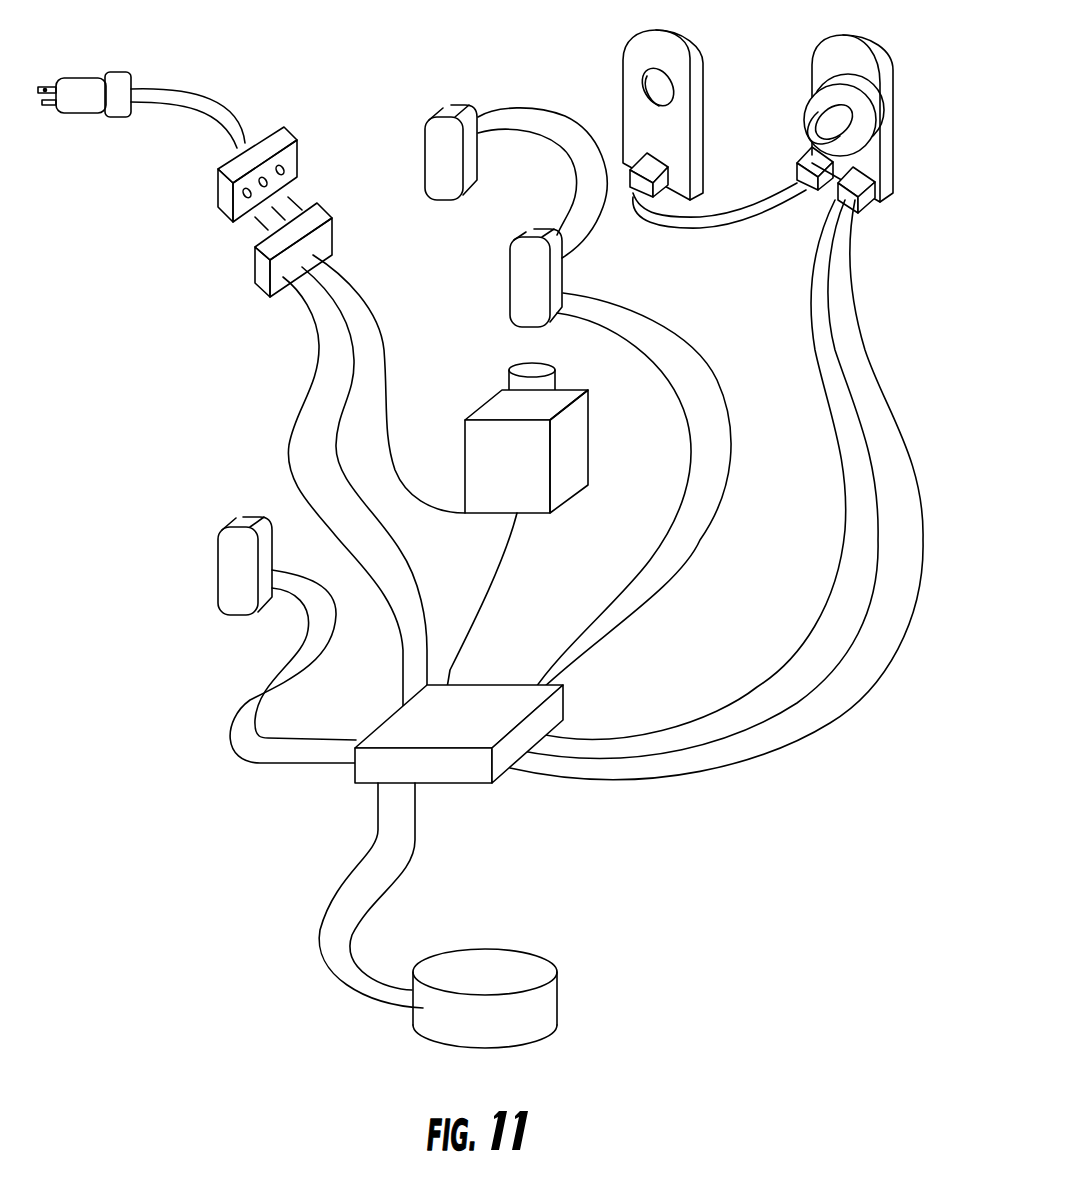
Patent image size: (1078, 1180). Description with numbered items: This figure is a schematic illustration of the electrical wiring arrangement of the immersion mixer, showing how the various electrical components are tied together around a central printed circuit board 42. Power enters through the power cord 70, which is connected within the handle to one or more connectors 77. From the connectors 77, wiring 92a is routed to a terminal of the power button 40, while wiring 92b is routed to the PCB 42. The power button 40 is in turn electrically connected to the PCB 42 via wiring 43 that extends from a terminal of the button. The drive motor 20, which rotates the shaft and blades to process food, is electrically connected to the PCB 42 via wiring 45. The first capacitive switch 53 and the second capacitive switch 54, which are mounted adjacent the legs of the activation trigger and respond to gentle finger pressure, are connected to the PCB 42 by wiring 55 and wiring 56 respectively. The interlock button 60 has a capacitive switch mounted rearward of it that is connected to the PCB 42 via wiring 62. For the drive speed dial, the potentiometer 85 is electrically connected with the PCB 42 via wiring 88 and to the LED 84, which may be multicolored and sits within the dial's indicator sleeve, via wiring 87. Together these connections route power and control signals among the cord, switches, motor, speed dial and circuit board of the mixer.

The drive motor 20 is at (537, 1020).
The power button 40 is at (575, 436).
The printed circuit board 42 is at (460, 775).
The wiring 43 is at (492, 590).
The wiring 45 is at (367, 915).
The first capacitive switch 53 is at (535, 273).
The second capacitive switch 54 is at (455, 152).
The wiring 55 is at (715, 372).
The wiring 56 is at (575, 117).
The interlock button 60 is at (240, 583).
The wiring 62 is at (282, 765).
The power cord 70 is at (118, 90).
The connectors 77 is at (343, 203).
The LED 84 is at (695, 102).
The potentiometer 85 is at (887, 113).
The wiring 87 is at (717, 212).
The wiring 88 is at (863, 325).
The wiring 92a is at (373, 313).
The wiring 92b is at (312, 395).